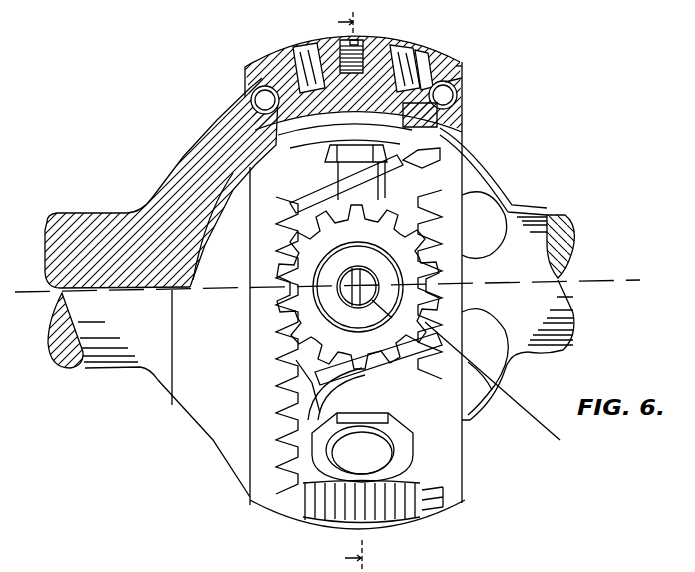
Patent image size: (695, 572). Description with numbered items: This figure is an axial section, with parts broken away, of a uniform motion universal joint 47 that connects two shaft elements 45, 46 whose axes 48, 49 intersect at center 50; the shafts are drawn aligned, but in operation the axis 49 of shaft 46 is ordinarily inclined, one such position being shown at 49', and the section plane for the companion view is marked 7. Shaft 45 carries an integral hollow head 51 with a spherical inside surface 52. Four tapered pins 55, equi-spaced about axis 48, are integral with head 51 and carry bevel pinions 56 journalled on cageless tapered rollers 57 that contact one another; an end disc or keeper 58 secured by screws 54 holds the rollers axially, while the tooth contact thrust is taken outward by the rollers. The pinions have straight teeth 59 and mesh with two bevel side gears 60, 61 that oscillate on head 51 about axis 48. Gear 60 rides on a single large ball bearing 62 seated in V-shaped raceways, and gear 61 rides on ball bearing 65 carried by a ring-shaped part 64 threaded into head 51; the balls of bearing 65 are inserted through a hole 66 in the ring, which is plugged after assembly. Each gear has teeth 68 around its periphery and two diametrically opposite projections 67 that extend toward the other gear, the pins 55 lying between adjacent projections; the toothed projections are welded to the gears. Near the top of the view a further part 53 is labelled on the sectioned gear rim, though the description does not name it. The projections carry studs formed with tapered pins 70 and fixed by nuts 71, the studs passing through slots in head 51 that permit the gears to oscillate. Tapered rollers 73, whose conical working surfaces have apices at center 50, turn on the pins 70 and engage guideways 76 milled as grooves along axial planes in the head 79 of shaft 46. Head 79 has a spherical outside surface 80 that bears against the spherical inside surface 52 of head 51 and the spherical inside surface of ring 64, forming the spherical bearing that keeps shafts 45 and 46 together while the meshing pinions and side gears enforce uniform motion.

The section line 7- 7 is at (343, 292).
The shaft element 45 is at (130, 223).
The shaft element 46 is at (523, 227).
The universal joint 47 is at (397, 180).
The axis of shaft 45 48 is at (43, 292).
The axis of shaft 46 49 is at (327, 300).
The inclined position of axis 49 49' is at (496, 381).
The center 50 is at (368, 279).
The hollow head 51 is at (217, 145).
The spherical inside surface 52 is at (288, 135).
The ring gear 53 is at (385, 56).
The screws 54 is at (358, 44).
The pins 55 is at (420, 60).
The bevel pinions 56 is at (298, 55).
The tapered rollers 57 is at (306, 58).
The end disc or keeper 58 is at (463, 64).
The teeth 59 is at (433, 63).
The bevel side gear 60 is at (262, 361).
The bevel side gear 61 is at (452, 306).
The ball bearing 62 is at (253, 98).
The ring-shaped part 64 is at (458, 100).
The ball bearing 65 is at (458, 97).
The hole 66 is at (440, 113).
The projections 67 is at (366, 276).
The teeth 68 is at (423, 143).
The tapered pins 70 is at (380, 458).
The nuts 71 is at (402, 433).
The tapered rollers 73 is at (296, 366).
The guideways 76 is at (485, 233).
The head of shaft 46 79 is at (481, 190).
The spherical outside surface 80 is at (478, 395).